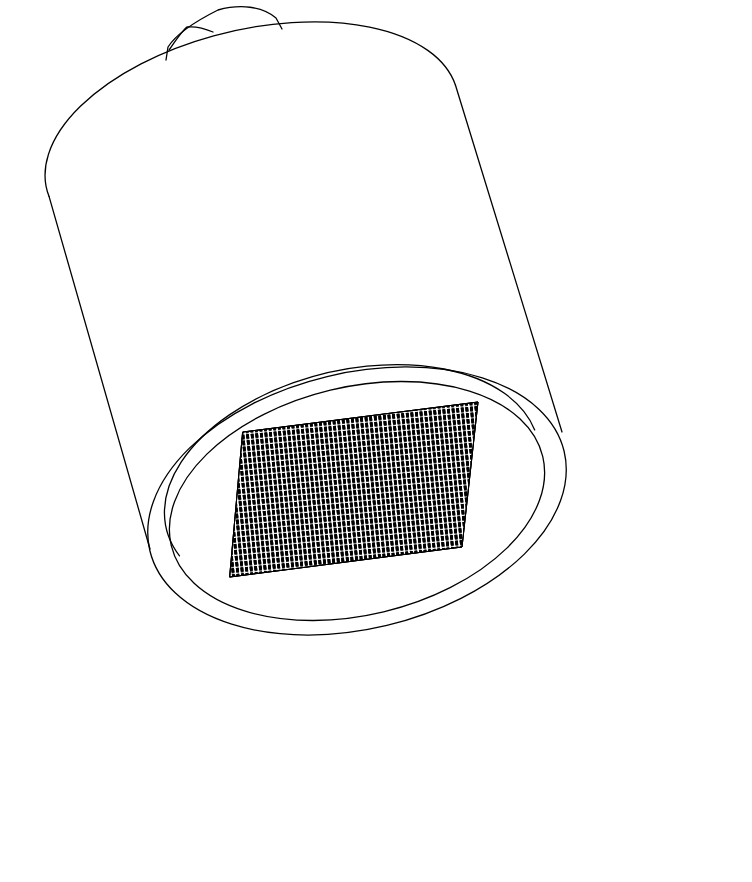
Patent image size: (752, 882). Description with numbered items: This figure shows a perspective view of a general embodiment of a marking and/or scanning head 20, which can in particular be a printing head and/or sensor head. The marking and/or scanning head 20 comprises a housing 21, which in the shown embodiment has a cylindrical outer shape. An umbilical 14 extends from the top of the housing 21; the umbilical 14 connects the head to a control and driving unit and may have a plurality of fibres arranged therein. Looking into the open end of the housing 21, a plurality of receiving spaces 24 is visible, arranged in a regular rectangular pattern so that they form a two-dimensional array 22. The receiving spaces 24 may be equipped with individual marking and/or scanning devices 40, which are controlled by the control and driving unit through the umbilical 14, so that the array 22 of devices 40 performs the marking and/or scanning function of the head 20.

The umbilical 14 is at (166, 53).
The marking and/or scanning head 20 is at (536, 156).
The housing 21 is at (485, 265).
The two-dimensional array 22 is at (436, 549).
The receiving spaces 24 is at (265, 568).
The marking and/or scanning devices 40 is at (335, 552).